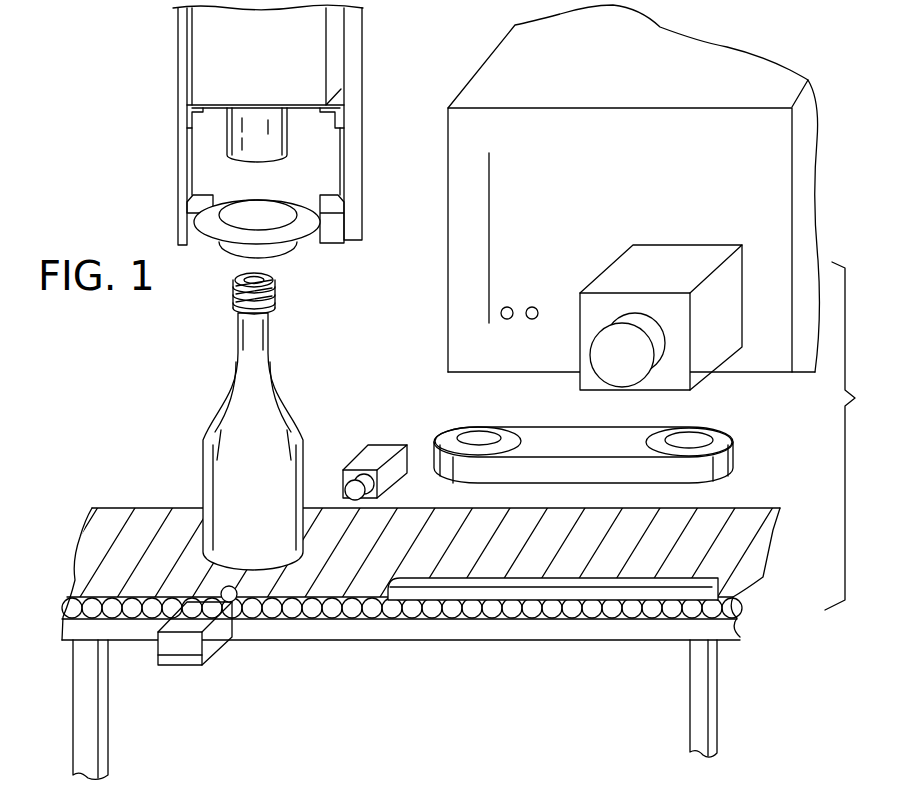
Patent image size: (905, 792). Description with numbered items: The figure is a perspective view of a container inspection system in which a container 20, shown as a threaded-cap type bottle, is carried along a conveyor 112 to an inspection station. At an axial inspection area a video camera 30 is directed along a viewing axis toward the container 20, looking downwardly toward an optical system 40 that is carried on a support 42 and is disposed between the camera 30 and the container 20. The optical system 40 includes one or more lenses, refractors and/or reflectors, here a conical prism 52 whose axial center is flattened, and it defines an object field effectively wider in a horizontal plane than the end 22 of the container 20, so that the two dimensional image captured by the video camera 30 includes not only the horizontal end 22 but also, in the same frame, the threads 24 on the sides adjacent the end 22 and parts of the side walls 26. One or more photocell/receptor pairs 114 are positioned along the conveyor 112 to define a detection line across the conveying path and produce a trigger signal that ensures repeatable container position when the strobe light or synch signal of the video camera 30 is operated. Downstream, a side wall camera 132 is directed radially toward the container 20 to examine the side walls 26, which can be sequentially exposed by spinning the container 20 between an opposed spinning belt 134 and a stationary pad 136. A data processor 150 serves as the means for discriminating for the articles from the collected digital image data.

The container 20 is at (246, 441).
The end 22 is at (258, 291).
The threads 24 is at (278, 303).
The side walls 26 is at (223, 465).
The video camera 30 is at (200, 80).
The optical system 40 is at (218, 233).
The support 42 is at (355, 170).
The conical prism 52 is at (300, 222).
The conveyor 112 is at (735, 527).
The photocell/receptor pair 114 is at (387, 447).
The side wall camera 132 is at (678, 373).
The spinning belt 134 is at (550, 447).
The stationary pad 136 is at (717, 580).
The data processor 150 is at (478, 98).